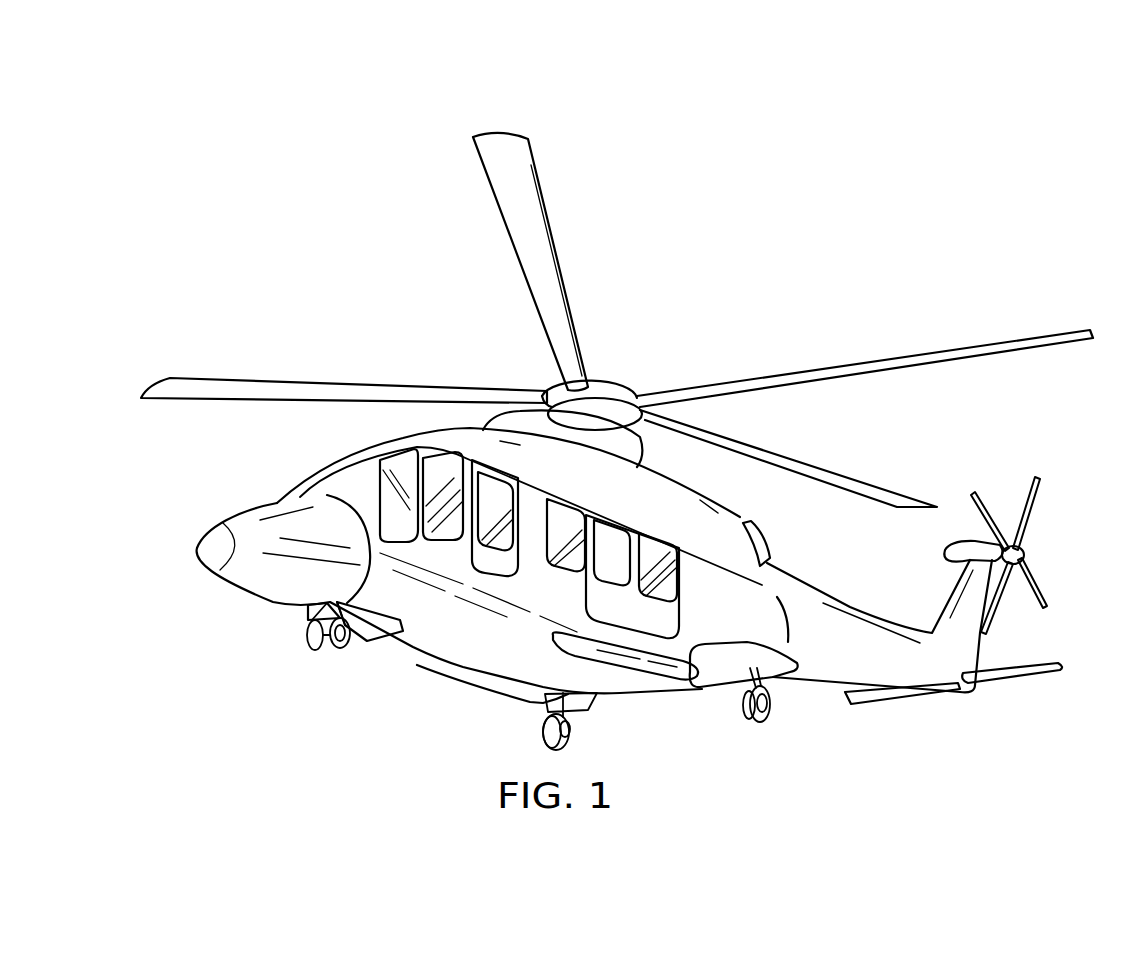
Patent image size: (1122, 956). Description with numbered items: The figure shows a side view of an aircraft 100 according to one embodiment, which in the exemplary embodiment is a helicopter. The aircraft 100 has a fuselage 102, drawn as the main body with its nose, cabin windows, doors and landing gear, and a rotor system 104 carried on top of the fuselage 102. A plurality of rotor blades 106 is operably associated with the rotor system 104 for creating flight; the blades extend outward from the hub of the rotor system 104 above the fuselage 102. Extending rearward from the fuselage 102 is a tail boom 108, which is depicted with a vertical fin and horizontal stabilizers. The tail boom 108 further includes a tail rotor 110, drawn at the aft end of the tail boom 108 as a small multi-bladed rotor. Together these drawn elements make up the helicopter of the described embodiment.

The aircraft 100 is at (283, 115).
The fuselage 102 is at (417, 647).
The rotor system 104 is at (625, 357).
The rotor blades 106 is at (852, 378).
The tail boom 108 is at (825, 672).
The tail rotor 110 is at (1027, 525).